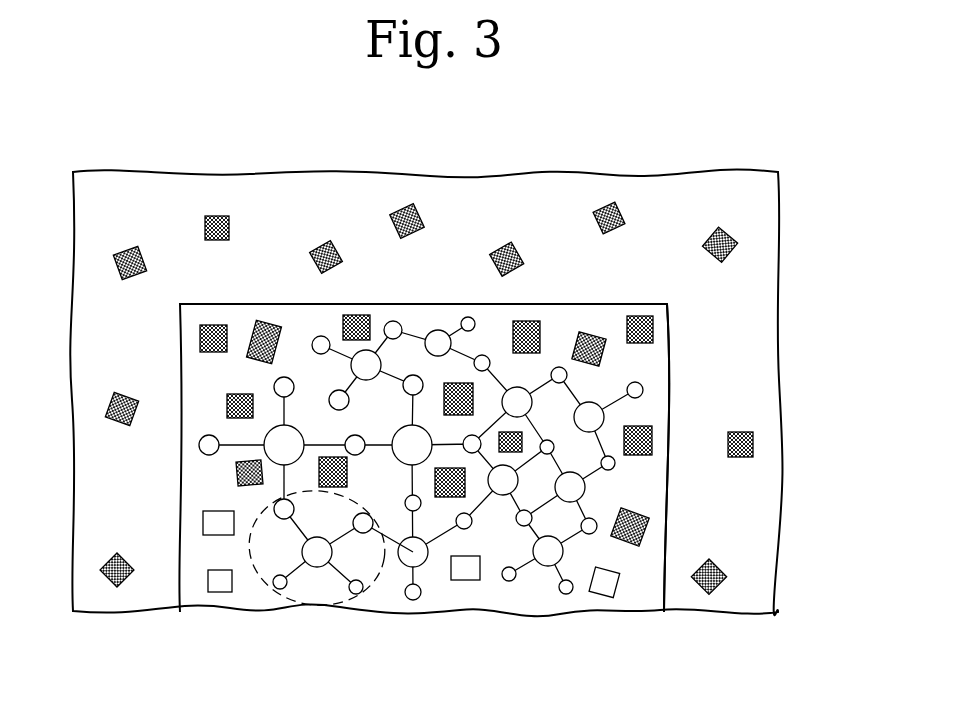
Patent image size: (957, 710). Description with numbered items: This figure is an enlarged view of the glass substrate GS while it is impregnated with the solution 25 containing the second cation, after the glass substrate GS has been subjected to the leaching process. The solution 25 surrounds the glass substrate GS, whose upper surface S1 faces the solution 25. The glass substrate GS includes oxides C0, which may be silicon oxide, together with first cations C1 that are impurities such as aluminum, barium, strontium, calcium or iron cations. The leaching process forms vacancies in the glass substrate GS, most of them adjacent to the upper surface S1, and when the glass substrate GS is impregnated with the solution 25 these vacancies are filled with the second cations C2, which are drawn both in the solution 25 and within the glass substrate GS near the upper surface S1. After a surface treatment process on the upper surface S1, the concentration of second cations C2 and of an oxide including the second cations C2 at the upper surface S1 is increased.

The solution 25 is at (764, 298).
The upper surface S1 is at (620, 303).
The glass substrate GS is at (674, 377).
The second cations C2 is at (355, 315).
The first cations C1 is at (600, 595).
The oxides C0 is at (303, 603).